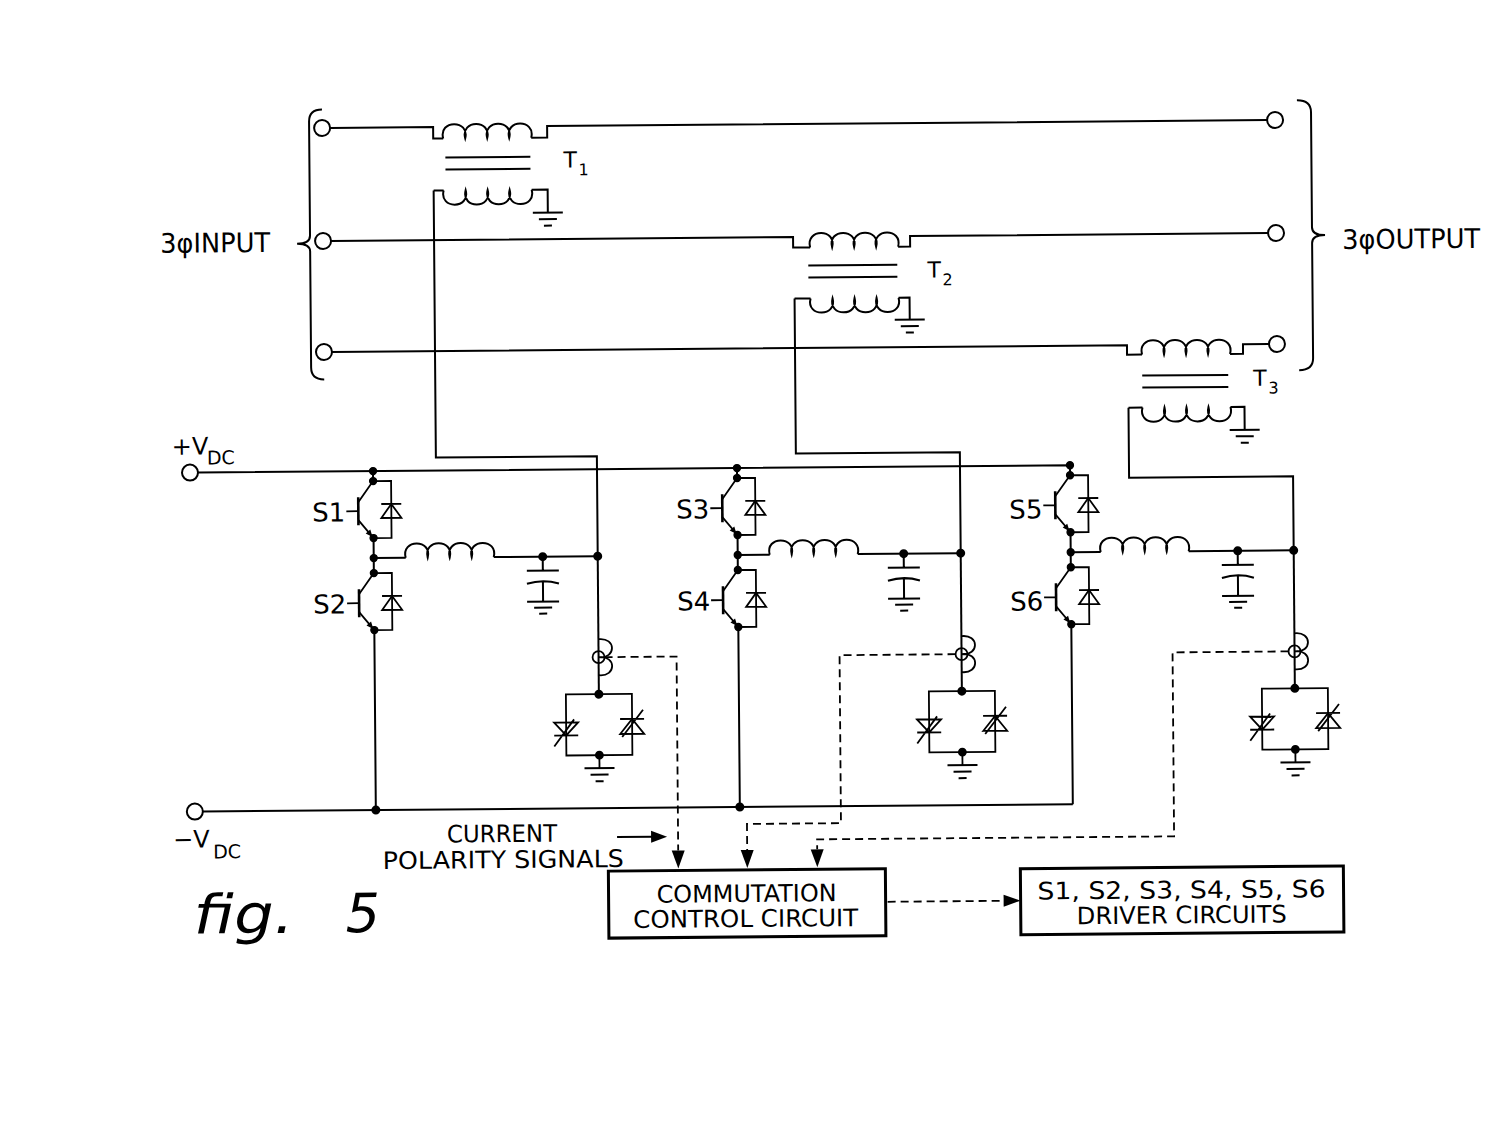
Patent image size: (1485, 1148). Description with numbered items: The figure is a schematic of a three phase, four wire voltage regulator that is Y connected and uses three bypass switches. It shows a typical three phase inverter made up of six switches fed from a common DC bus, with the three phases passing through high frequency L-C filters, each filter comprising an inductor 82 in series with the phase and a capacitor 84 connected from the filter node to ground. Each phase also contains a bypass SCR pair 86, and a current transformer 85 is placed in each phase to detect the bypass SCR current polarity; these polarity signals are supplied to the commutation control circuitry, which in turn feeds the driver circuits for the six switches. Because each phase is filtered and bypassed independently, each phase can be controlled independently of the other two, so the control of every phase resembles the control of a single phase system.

The inductor 82 is at (443, 543).
The capacitor 84 is at (526, 580).
The current transformer 85 is at (606, 636).
The bypass SCR pair 86 is at (548, 721).